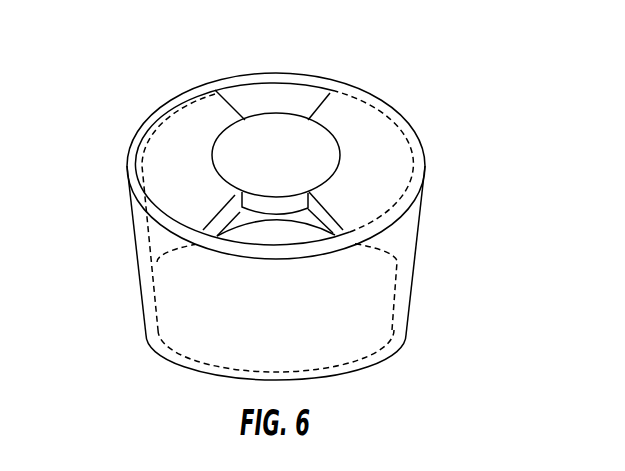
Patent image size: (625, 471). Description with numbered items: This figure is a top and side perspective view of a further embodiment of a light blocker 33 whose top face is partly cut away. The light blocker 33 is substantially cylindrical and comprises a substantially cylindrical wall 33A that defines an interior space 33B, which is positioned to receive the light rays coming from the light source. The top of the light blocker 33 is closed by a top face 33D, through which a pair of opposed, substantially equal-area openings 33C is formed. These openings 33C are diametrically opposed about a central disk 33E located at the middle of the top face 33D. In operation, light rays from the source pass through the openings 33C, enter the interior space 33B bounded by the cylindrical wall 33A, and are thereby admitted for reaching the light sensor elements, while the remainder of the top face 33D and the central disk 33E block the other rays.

The light blocker 33 is at (272, 198).
The cylindrical wall 33A is at (400, 258).
The interior space 33B is at (237, 303).
The openings 33C is at (273, 230).
The top face 33D is at (355, 132).
The central disk 33E is at (285, 148).